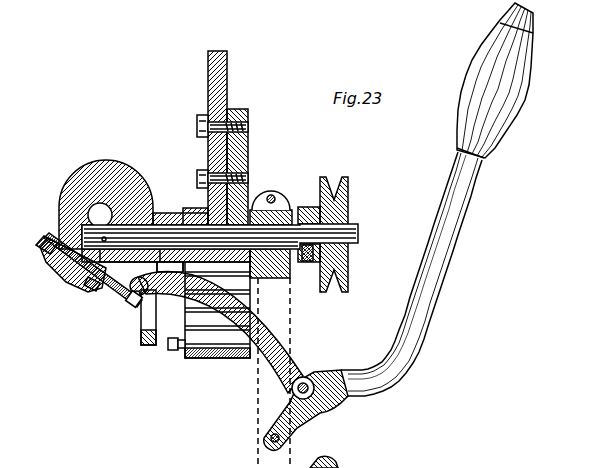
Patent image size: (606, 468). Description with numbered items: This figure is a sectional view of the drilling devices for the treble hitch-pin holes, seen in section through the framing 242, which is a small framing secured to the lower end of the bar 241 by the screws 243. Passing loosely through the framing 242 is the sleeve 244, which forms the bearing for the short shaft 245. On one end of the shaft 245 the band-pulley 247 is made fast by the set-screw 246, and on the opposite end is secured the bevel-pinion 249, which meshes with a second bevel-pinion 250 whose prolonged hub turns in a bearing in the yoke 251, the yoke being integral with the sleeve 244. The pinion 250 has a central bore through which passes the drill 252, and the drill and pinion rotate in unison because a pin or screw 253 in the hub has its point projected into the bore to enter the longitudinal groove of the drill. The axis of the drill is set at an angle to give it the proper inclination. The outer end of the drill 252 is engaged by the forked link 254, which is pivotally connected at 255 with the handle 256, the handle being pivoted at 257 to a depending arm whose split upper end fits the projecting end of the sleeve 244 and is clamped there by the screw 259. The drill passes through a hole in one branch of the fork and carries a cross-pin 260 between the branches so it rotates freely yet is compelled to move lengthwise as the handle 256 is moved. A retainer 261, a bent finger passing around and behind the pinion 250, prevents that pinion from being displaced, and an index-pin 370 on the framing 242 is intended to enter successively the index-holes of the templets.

The bar 241 is at (227, 74).
The framing 242 is at (249, 150).
The screws 243 is at (197, 128).
The sleeve 244 is at (285, 221).
The shaft 245 is at (360, 233).
The set-screw 246 is at (306, 262).
The band-pulley 247 is at (349, 191).
The bevel-pinion 249 is at (97, 204).
The bevel-pinion 250 is at (72, 280).
The yoke 251 is at (72, 177).
The drill 252 is at (128, 303).
The pin or screw 253 is at (51, 240).
The link 254 is at (268, 362).
The pivot 255 is at (307, 379).
The handle 256 is at (404, 350).
The pivot 257 is at (285, 437).
The screw 259 is at (273, 194).
The cross-pin 260 is at (148, 300).
The retainer 261 is at (96, 290).
The index-pin 370 is at (178, 352).